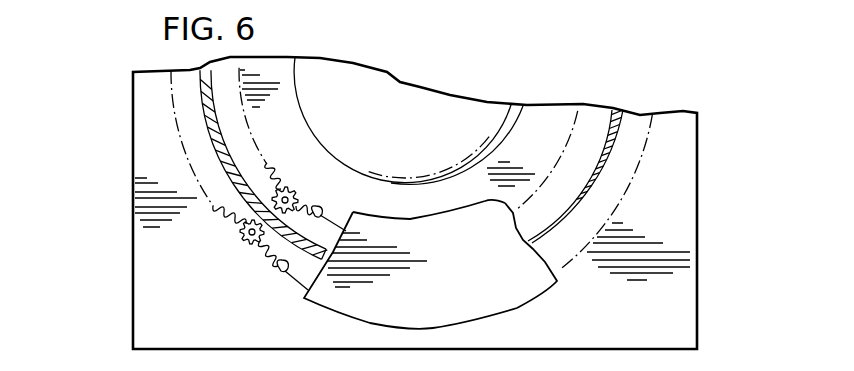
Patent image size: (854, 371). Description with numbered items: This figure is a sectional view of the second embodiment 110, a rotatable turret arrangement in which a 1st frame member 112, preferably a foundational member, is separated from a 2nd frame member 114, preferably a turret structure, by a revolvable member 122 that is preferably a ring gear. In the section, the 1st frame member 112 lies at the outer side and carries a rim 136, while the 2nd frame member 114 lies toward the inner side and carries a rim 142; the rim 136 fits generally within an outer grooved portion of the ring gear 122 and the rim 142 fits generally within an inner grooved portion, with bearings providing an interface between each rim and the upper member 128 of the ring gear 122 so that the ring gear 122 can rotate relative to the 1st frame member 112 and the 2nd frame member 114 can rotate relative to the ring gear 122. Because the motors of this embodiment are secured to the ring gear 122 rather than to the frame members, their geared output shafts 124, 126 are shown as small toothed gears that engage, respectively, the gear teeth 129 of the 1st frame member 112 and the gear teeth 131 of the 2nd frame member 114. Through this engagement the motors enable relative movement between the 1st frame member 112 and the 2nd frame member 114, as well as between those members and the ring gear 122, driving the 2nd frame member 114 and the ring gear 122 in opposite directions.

The second embodiment 110 is at (116, 211).
The 1st frame member 112 is at (677, 217).
The 2nd frame member 114 is at (364, 108).
The revolvable member 122 is at (350, 318).
The geared output shaft 124 is at (251, 246).
The geared output shaft 126 is at (289, 188).
The upper member 128 is at (397, 213).
The gear teeth 129 is at (282, 273).
The gear teeth 131 is at (320, 211).
The rim 136 is at (152, 265).
The rim 142 is at (298, 147).